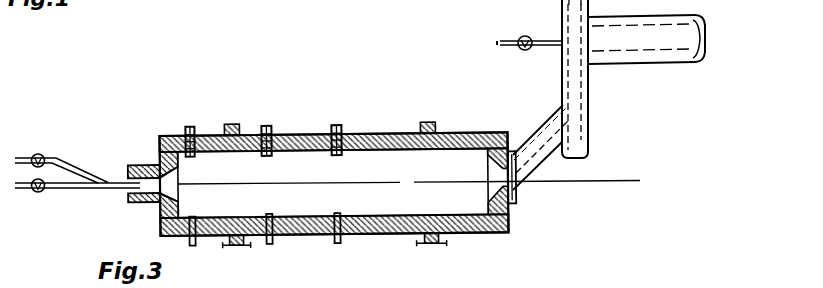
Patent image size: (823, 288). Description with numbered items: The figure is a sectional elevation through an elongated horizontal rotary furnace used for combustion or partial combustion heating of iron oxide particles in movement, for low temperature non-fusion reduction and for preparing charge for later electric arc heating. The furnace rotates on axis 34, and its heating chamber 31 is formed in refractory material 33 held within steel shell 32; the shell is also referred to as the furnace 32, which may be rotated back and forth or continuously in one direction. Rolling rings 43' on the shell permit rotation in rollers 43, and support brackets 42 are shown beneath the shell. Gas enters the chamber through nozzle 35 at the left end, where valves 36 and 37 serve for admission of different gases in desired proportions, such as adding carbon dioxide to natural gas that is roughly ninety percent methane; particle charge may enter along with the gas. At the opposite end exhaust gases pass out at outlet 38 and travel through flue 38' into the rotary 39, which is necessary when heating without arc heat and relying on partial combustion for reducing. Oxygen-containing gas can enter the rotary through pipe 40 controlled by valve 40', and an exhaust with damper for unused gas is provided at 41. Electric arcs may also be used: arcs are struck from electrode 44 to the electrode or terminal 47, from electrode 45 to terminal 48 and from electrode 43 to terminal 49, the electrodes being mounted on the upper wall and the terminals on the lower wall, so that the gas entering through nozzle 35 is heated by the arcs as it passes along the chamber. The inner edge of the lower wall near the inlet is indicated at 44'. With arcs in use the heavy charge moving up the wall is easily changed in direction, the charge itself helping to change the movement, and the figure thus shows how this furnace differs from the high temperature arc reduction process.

The chamber 31 is at (296, 172).
The steel shell 32 is at (368, 132).
The refractory material 33 is at (316, 133).
The axis 34 is at (613, 178).
The nozzle 35 is at (119, 176).
The valve 36 is at (38, 154).
The valve 37 is at (37, 193).
The exhaust outlet 38 is at (489, 177).
The flue 38' is at (541, 147).
The rotary 39 is at (651, 52).
The pipe 40 is at (515, 57).
The valve 40' is at (533, 55).
The exhaust with damper 41 is at (560, 2).
The support bracket 42 is at (239, 249).
The electrode 43 is at (342, 119).
The rolling rings 43' is at (355, 254).
The electrode 44 is at (192, 126).
The inner wall edge 44' is at (199, 202).
The electrode 45 is at (269, 126).
The electrode or terminal 47 is at (194, 245).
The electrode or terminal 48 is at (273, 247).
The electrode or terminal 49 is at (340, 245).